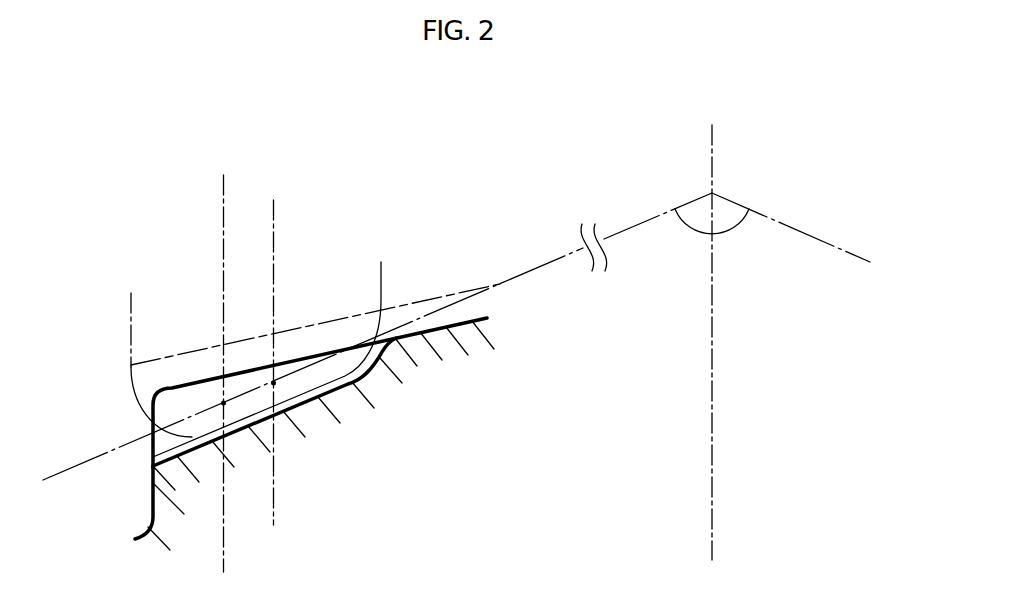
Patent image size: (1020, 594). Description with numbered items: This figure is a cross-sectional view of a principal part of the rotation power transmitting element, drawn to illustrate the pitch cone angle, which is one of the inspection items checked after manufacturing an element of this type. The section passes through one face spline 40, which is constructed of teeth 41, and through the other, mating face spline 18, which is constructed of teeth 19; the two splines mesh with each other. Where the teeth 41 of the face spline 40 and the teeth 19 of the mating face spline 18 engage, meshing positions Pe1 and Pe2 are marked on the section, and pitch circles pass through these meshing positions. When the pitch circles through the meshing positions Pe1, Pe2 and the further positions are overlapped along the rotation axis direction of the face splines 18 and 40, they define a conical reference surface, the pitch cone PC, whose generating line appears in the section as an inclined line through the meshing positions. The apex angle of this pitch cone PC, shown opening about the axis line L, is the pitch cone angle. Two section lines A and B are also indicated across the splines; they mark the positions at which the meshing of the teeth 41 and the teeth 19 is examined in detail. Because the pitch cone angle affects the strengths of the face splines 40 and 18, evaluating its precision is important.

The mating face spline 18 is at (116, 370).
The teeth 19 is at (152, 457).
The face spline 40 is at (340, 338).
The teeth 41 is at (178, 406).
The meshing position Pe1 is at (223, 403).
The meshing position Pe2 is at (273, 383).
The pitch cone PC is at (628, 228).
The reference line L is at (713, 144).
The section A- A is at (225, 183).
The section B- B is at (275, 210).